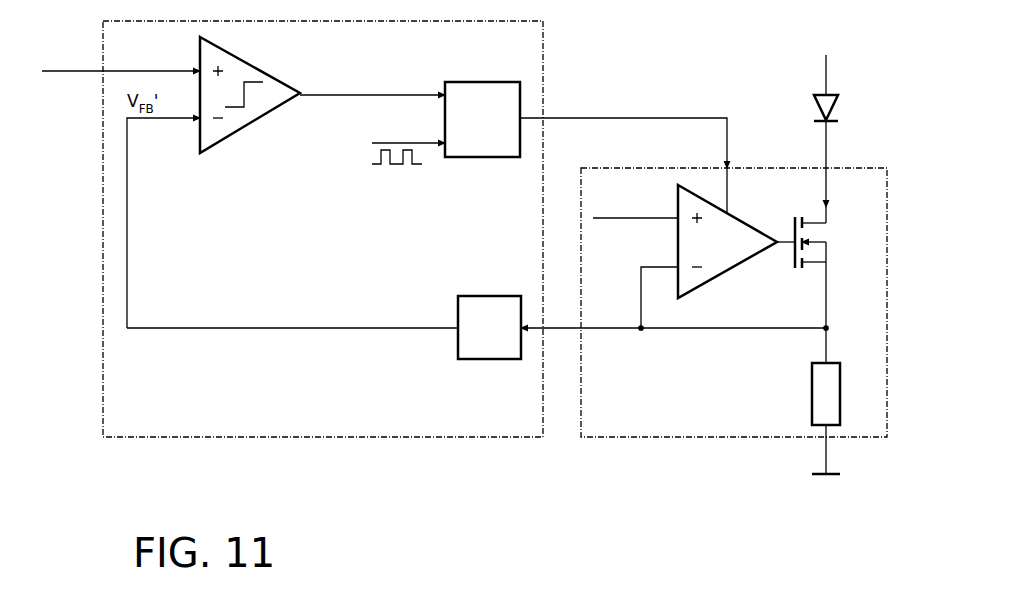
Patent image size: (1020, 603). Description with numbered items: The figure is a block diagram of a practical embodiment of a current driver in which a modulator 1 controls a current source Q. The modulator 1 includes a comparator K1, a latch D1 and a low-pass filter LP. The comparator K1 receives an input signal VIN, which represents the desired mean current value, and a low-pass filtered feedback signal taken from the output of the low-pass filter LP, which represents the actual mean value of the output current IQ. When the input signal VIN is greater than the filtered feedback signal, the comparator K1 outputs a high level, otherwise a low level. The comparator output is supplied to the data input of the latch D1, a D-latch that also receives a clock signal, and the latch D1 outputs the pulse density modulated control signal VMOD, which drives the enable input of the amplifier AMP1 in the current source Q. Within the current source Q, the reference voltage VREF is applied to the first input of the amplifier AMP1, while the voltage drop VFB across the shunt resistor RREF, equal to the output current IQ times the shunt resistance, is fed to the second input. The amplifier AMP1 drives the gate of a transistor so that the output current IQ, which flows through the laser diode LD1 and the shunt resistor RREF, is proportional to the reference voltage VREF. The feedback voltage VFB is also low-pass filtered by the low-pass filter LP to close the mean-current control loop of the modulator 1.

The modulator 1 is at (375, 437).
The current source Q is at (703, 437).
The comparator K1 is at (250, 98).
The latch D1 is at (498, 157).
The low-pass filter LP is at (384, 327).
The amplifier AMP1 is at (708, 257).
The laser diode LD1 is at (843, 90).
The shunt resistor RREF is at (803, 401).
The input signal VIN is at (121, 58).
The feedback voltage VFB is at (609, 328).
The pulse density modulated control signal VMOD is at (623, 153).
The reference voltage VREF is at (635, 205).
The output current IQ is at (836, 172).